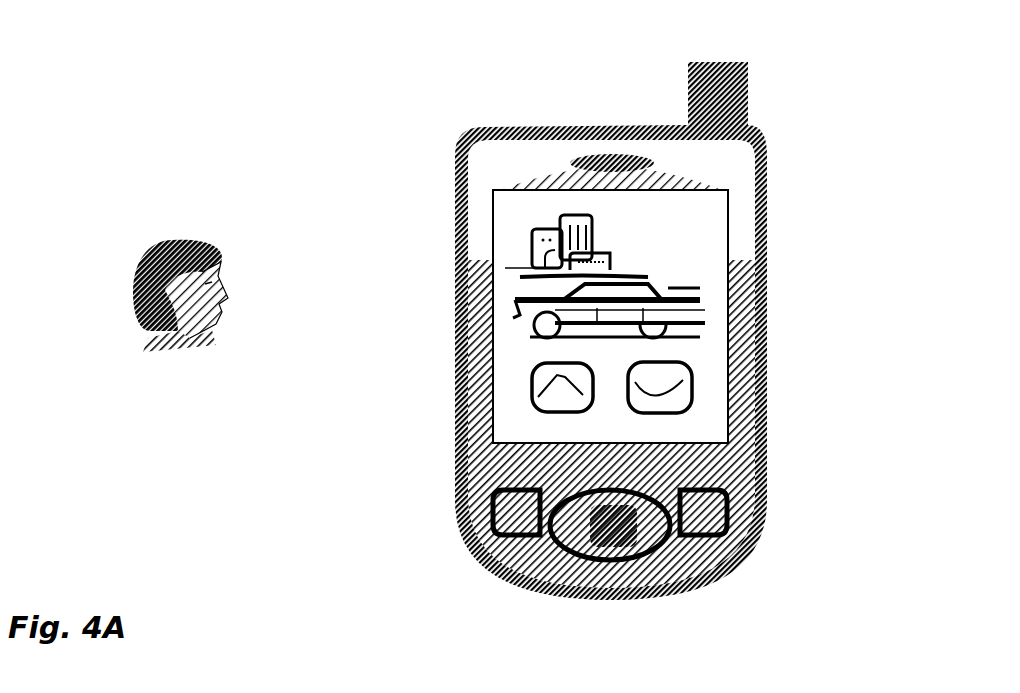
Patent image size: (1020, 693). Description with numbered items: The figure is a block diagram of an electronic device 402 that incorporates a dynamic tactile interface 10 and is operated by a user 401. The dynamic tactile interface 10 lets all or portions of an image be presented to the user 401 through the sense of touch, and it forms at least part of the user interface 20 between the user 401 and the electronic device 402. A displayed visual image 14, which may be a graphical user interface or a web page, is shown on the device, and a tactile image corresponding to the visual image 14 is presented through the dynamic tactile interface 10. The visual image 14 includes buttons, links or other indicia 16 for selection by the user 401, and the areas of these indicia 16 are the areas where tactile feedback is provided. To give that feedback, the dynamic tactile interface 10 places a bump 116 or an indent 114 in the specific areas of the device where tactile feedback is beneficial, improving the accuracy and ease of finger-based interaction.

The electronic device 402 is at (797, 87).
The user 401 is at (228, 263).
The visual image 14 is at (518, 211).
The dynamic tactile interface 10 is at (678, 250).
The indicia 16 is at (532, 380).
The bump 116 is at (558, 404).
The indent 114 is at (670, 378).
The user interface 20 is at (631, 479).